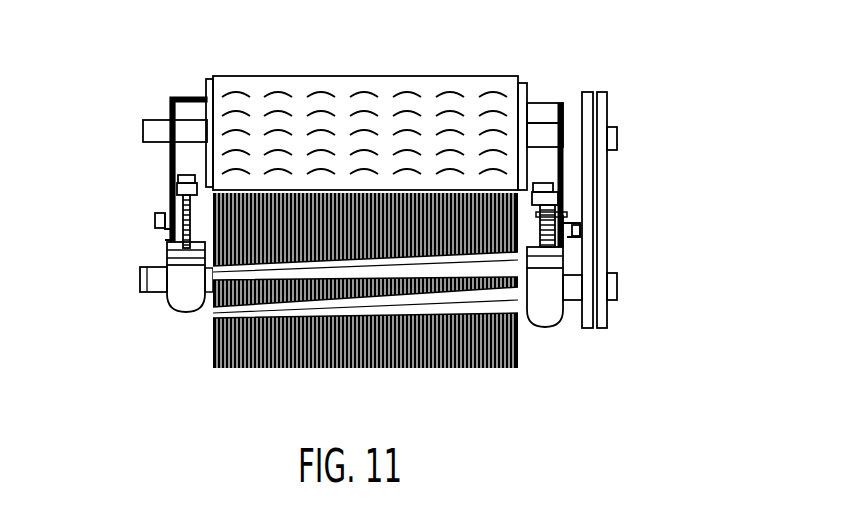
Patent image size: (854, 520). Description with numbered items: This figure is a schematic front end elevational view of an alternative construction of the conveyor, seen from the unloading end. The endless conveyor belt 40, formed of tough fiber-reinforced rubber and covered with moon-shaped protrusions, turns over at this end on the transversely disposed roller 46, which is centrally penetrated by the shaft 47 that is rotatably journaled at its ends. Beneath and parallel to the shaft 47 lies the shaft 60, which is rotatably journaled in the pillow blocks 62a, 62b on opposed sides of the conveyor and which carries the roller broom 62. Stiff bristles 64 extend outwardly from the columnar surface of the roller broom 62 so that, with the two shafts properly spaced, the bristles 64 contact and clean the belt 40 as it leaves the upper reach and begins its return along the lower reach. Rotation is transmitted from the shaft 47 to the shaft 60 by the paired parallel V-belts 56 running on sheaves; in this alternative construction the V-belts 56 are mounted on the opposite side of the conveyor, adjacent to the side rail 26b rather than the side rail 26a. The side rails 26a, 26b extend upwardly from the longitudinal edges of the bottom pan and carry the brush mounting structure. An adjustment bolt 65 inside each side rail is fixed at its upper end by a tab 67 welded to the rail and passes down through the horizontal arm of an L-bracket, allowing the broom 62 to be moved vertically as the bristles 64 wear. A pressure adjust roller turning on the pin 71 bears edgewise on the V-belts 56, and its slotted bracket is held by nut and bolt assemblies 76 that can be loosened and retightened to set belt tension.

The endless conveyor belt 40 is at (393, 90).
The roller 46 is at (527, 98).
The shaft 47 is at (150, 132).
The paired parallel V-belts 56 is at (600, 92).
The side rail 26a is at (168, 152).
The side rail 26b is at (563, 118).
The shaft 60 is at (150, 279).
The roller broom 62 is at (262, 371).
The pillow block 62a is at (178, 313).
The pillow block 62b is at (548, 329).
The bristles 64 is at (484, 369).
The adjustment bolt 65 is at (163, 240).
The tab 67 is at (550, 187).
The pin or shaft 71 is at (567, 213).
The nut and bolt assemblies 76 is at (155, 225).